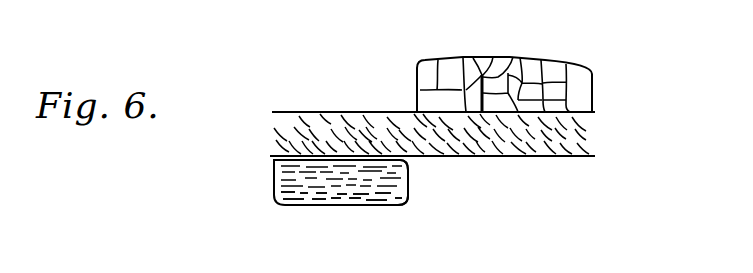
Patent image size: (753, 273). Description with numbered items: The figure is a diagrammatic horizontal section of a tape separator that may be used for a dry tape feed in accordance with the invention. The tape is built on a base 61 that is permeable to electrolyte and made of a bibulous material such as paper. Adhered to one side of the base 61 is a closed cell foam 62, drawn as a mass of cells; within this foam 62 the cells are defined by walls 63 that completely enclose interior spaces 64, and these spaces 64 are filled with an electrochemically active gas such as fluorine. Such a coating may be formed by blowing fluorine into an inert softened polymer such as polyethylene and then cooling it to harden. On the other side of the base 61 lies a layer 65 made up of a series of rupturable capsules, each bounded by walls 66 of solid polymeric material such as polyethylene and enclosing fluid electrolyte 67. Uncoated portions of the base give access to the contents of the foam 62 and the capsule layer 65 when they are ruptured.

The base 61 is at (265, 140).
The closed cell foam 62 is at (595, 84).
The walls 63 is at (480, 58).
The interior spaces 64 is at (446, 68).
The layer 65 is at (270, 186).
The walls 66 is at (406, 198).
The fluid electrolyte 67 is at (322, 196).